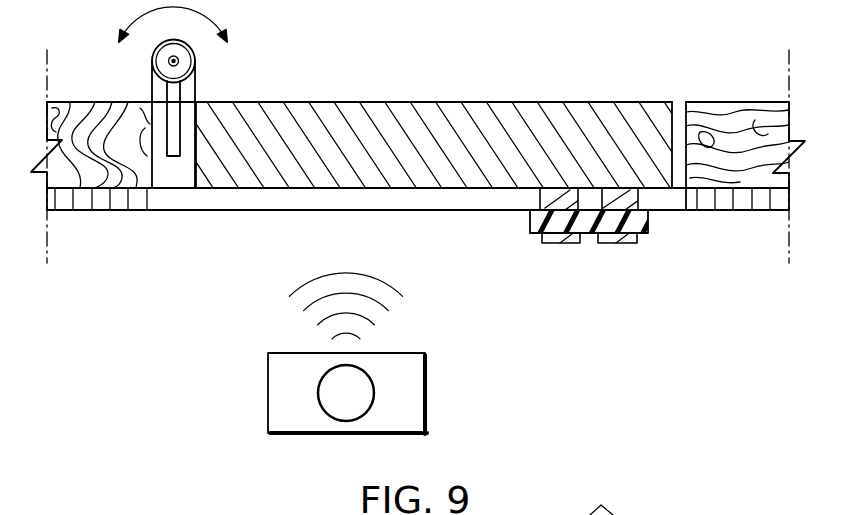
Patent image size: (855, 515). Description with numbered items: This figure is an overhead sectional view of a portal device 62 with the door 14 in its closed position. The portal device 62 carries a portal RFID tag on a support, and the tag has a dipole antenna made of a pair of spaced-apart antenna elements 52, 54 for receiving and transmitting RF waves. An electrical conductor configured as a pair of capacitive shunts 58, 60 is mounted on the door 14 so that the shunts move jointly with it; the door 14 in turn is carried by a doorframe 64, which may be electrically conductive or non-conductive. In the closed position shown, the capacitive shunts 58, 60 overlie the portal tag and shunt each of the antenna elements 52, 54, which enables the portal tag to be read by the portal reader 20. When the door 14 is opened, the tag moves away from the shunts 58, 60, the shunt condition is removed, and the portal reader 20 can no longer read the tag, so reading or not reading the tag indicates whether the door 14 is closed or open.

The door 14 is at (435, 112).
The portal reader 20 is at (268, 392).
The antenna element 52 is at (562, 244).
The antenna element 54 is at (618, 244).
The capacitive shunt 58 is at (563, 190).
The capacitive shunt 60 is at (622, 197).
The portal device 62 is at (652, 245).
The doorframe 64 is at (239, 200).